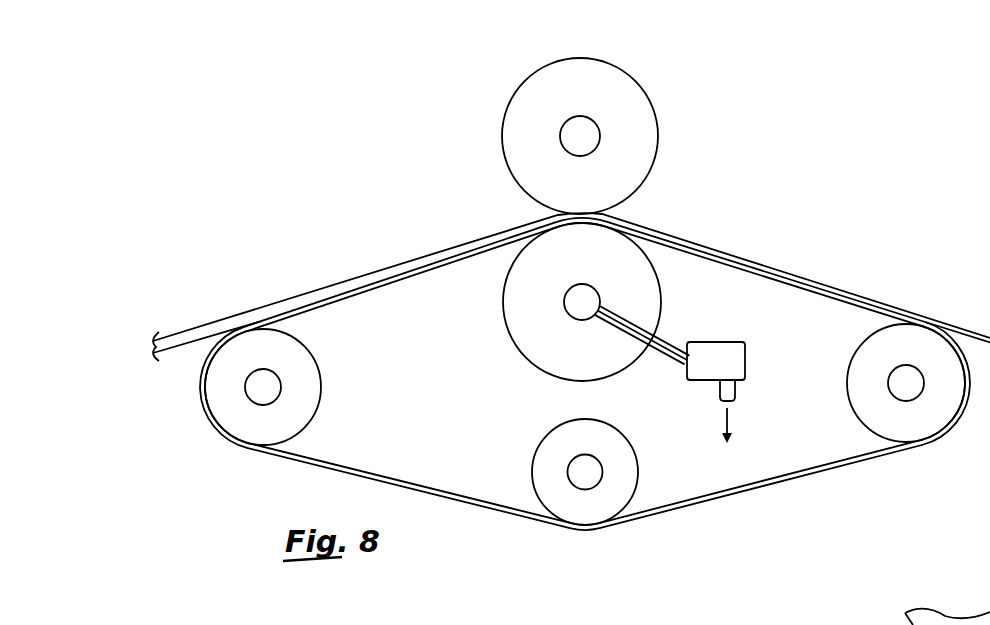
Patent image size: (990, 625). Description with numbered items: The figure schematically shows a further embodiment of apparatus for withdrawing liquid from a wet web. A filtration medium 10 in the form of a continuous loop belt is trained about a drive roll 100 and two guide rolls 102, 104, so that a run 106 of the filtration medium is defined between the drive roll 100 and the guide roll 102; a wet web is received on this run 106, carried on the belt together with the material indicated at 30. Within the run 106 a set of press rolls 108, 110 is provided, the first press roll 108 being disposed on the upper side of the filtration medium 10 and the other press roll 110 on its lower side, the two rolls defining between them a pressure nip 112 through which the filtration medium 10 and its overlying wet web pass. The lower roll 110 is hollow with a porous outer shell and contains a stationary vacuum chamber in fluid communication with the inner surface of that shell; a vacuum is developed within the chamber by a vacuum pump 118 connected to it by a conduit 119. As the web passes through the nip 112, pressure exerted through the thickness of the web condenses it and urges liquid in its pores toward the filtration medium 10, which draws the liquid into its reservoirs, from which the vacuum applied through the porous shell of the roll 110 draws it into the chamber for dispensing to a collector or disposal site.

The filtration medium 10 is at (380, 293).
The sheet 30 is at (420, 259).
The drive roll 100 is at (303, 412).
The guide roll 102 is at (858, 393).
The guide roll 104 is at (618, 467).
The run 106 is at (452, 268).
The press roll 108 is at (643, 136).
The press roll 110 is at (530, 343).
The pressure nip 112 is at (618, 212).
The vacuum pump 118 is at (745, 372).
The conduit 119 is at (663, 357).